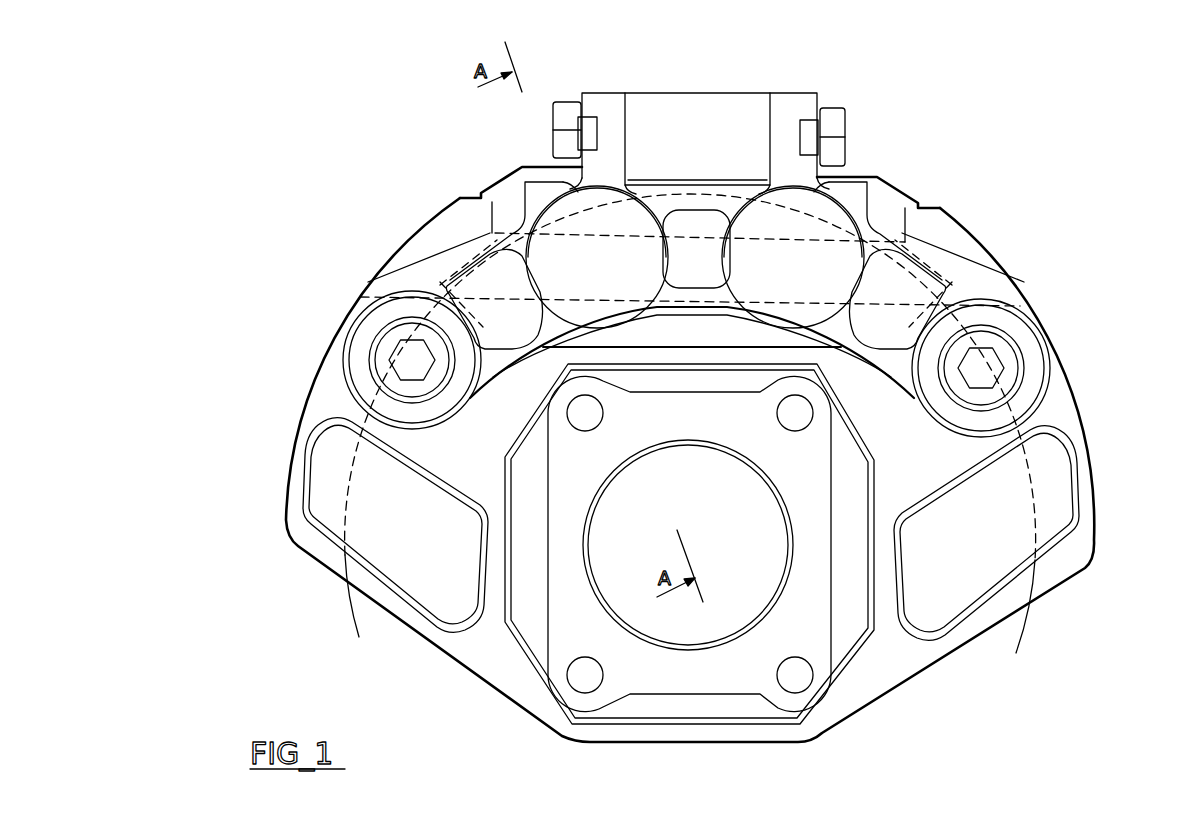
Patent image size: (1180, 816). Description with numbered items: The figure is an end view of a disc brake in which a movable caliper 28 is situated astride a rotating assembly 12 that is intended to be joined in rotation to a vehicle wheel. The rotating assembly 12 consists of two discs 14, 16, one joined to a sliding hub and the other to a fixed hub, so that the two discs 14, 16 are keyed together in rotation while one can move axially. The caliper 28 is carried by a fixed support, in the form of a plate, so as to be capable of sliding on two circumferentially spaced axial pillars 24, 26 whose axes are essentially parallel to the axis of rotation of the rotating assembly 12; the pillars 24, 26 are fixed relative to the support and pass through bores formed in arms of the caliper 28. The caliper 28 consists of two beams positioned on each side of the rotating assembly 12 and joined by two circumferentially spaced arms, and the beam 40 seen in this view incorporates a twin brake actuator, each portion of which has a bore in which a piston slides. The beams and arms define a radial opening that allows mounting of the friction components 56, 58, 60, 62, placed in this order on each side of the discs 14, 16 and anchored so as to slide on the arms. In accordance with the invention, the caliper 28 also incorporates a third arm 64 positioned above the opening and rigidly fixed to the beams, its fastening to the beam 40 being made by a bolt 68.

The rotating assembly 12 is at (361, 636).
The disc 14 is at (473, 265).
The disc 16 is at (919, 265).
The axial pillar 24 is at (416, 357).
The axial pillar 26 is at (982, 370).
The movable caliper 28 is at (976, 236).
The beam 40 is at (822, 267).
The friction component 56 is at (903, 184).
The friction component 58 is at (793, 257).
The friction component 60 is at (696, 249).
The friction component 62 is at (597, 222).
The third arm 64 is at (720, 92).
The bolt 68 is at (567, 120).